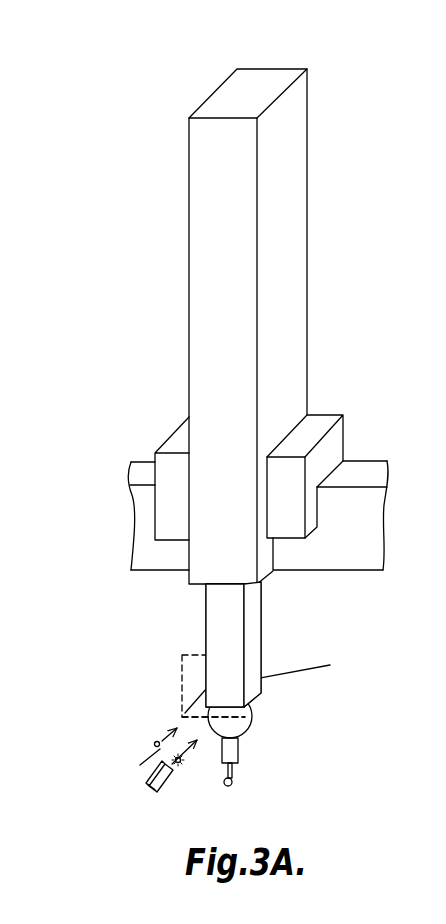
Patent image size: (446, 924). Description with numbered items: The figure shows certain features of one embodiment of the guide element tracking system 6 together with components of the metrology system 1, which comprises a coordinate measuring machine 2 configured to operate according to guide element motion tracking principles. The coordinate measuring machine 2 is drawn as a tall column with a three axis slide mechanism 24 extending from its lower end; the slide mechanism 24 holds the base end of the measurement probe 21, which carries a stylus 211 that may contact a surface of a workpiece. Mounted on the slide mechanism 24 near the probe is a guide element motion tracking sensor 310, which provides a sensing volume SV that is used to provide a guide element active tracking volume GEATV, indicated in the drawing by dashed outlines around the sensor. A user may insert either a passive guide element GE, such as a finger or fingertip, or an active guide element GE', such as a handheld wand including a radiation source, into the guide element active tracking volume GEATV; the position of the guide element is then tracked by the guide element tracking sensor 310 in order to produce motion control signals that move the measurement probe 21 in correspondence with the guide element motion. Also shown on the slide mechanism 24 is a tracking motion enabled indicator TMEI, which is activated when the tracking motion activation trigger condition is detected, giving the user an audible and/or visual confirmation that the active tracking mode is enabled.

The metrology system 1 is at (221, 299).
The coordinate measuring machine 2 is at (173, 62).
The three axis slide mechanism 24 is at (233, 604).
The guide element tracking system 6 is at (177, 716).
The tracking motion enabled indicator TMEI is at (220, 624).
The guide element active tracking volume GEATV is at (197, 686).
The sensing volume SV is at (202, 689).
The guide element motion tracking sensor 310 is at (181, 714).
The passive guide element GE is at (137, 747).
The active guide element GE' is at (174, 783).
The measurement probe 21 is at (264, 695).
The stylus 211 is at (232, 783).